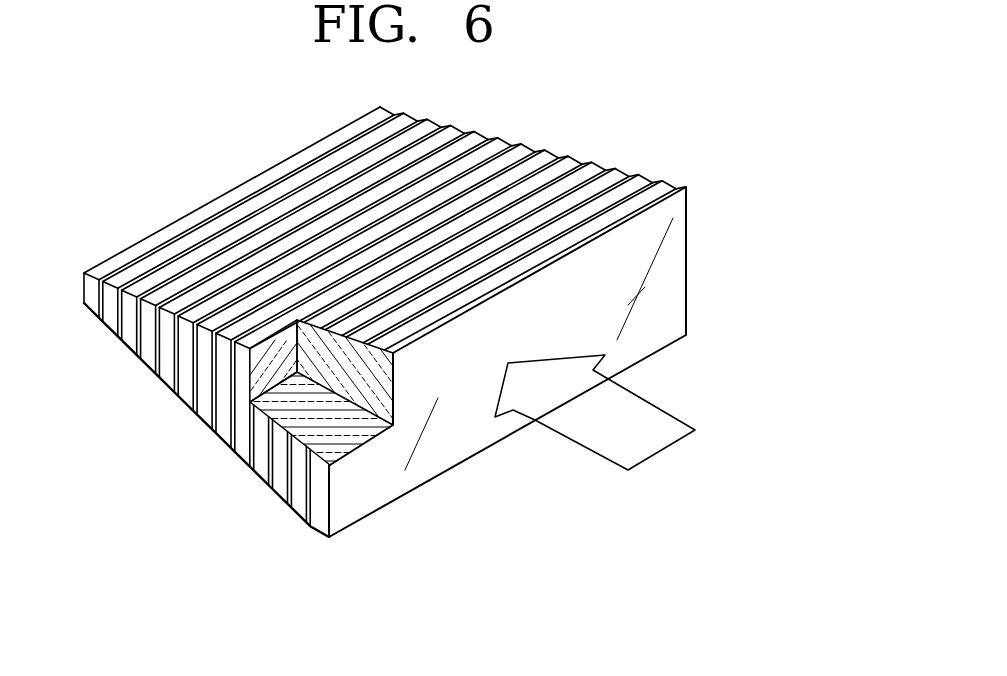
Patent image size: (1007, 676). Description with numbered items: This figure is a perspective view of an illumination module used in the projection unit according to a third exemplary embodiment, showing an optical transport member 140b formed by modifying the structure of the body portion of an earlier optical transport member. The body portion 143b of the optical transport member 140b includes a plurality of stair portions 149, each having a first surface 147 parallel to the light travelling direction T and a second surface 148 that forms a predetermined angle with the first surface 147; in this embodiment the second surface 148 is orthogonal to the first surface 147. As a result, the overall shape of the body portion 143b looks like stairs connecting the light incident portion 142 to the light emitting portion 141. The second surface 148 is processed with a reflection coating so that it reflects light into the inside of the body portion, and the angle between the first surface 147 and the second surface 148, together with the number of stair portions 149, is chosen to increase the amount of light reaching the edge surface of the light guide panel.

The optical transport member 140b is at (312, 570).
The light emitting portion 141 is at (89, 280).
The light incident portion 142 is at (345, 518).
The body portion 143b is at (182, 444).
The first surface 147 is at (467, 336).
The second surface 148 is at (437, 325).
The stair portions 149 is at (531, 488).
The light travelling direction T is at (588, 453).